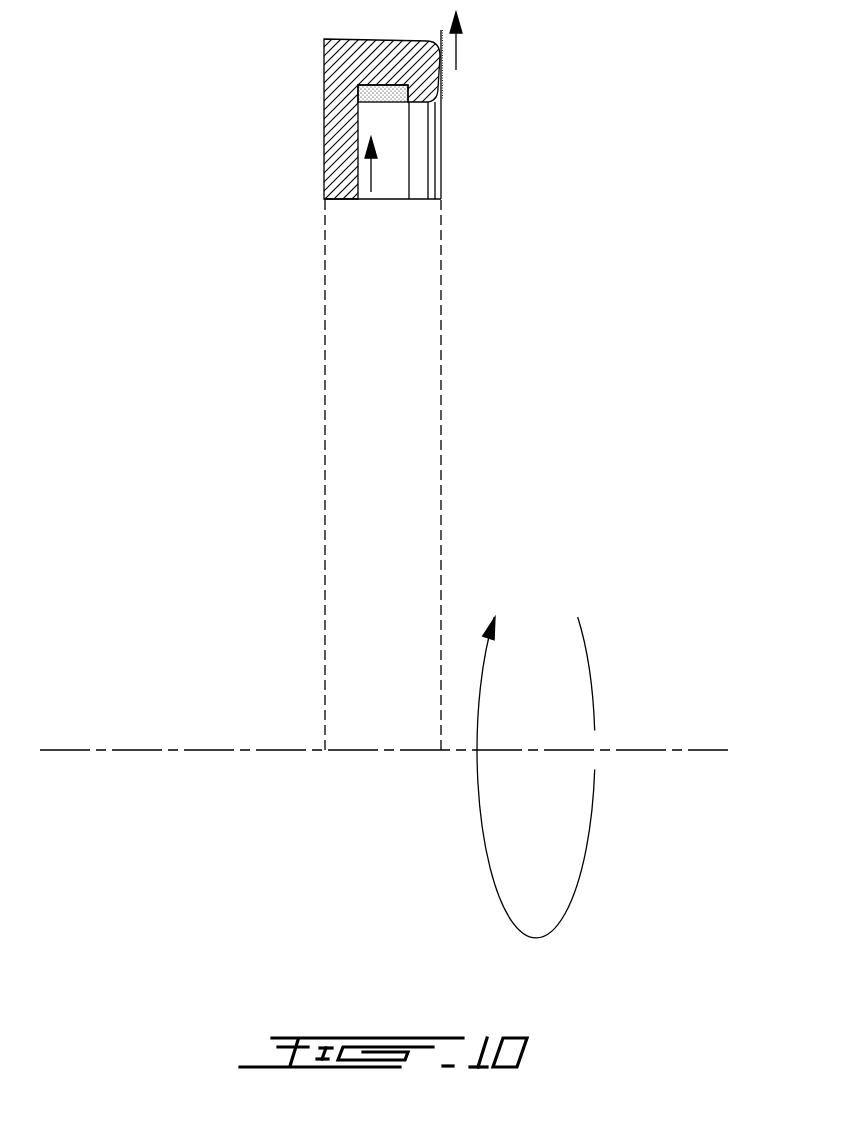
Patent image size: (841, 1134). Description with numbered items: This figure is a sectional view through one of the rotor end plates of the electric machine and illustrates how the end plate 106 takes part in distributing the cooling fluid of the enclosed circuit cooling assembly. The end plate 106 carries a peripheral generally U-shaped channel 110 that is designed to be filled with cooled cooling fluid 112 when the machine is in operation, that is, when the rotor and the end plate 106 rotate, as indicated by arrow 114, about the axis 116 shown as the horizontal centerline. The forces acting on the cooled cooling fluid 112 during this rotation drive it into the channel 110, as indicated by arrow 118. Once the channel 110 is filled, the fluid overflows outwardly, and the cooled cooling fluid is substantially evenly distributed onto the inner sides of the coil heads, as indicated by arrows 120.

The end plate 106 is at (325, 157).
The peripheral generally U-shaped channel 110 is at (401, 103).
The cooled cooling fluid 112 is at (365, 98).
The arrow indicating rotation 114 is at (485, 845).
The axis 116 is at (687, 748).
The arrow indicating fluid flow into channel 118 is at (373, 175).
The arrows indicating fluid overflow 120 is at (458, 50).